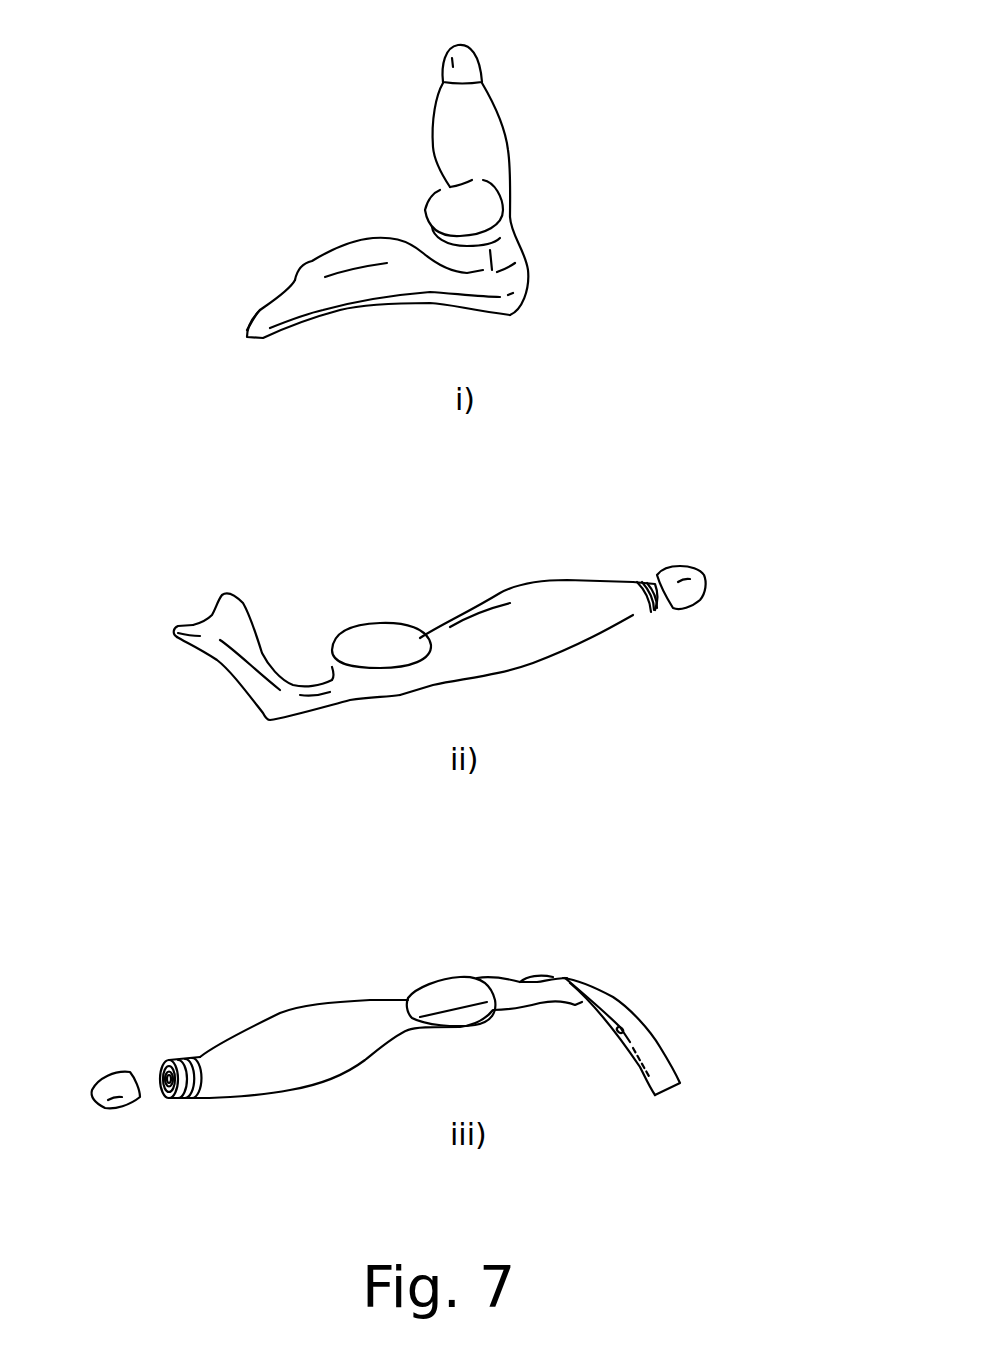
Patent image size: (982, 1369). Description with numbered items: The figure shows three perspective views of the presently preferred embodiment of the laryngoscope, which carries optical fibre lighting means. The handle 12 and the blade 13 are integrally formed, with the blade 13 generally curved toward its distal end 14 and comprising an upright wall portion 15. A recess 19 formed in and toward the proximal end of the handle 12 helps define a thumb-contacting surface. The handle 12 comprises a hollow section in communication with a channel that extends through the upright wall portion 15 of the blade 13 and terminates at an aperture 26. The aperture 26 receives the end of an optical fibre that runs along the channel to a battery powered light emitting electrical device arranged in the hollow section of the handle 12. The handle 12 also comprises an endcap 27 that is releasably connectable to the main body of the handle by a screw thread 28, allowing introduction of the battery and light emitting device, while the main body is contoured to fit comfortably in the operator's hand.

The handle 12 is at (500, 163).
The blade 13 is at (424, 643).
The distal end 14 is at (247, 337).
The upright wall portion 15 is at (343, 262).
The recess 19 is at (450, 212).
The aperture 26 is at (623, 1030).
The endcap 27 is at (477, 55).
The screw thread 28 is at (658, 607).